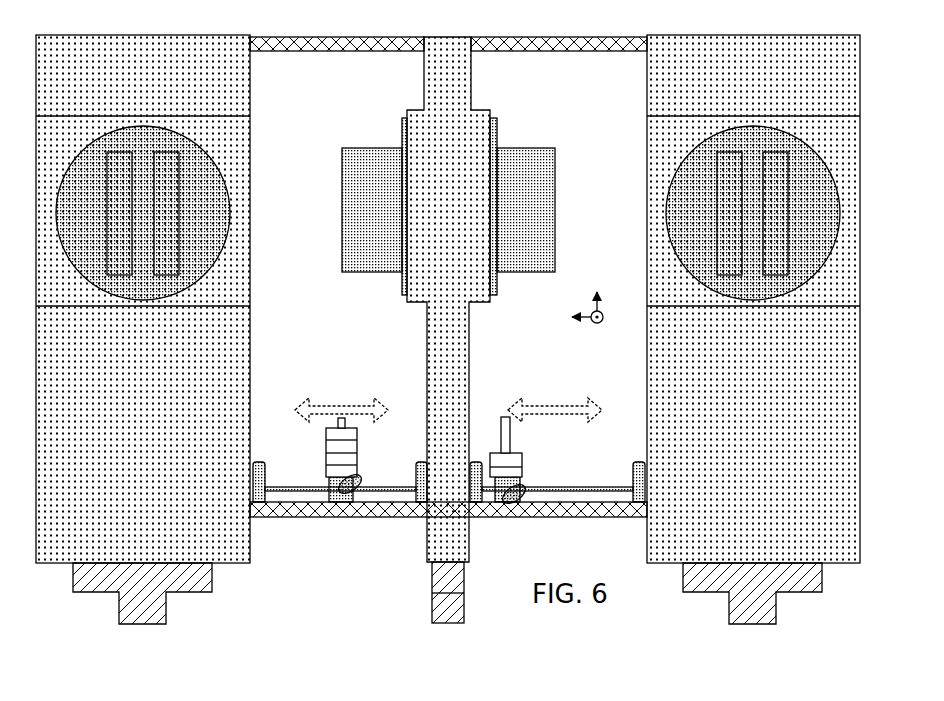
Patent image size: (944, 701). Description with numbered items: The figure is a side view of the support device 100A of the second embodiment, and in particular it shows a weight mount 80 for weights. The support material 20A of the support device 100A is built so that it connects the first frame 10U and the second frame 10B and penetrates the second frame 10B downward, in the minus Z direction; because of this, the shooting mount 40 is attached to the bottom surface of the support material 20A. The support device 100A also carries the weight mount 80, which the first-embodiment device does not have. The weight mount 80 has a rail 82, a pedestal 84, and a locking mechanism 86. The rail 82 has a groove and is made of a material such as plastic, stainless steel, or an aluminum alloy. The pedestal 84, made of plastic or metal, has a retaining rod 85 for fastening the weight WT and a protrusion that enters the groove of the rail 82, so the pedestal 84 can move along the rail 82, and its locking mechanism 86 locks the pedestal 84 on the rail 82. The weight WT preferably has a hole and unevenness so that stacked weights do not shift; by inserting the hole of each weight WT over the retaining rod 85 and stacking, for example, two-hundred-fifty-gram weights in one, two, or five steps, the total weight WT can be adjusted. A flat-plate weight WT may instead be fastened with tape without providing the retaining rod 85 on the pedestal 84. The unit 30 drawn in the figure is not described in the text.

The support device 100A is at (346, 129).
The first frame 10U is at (448, 57).
The second frame 10B is at (448, 524).
The support material 20A is at (448, 299).
The magnet / coil unit 30 is at (448, 213).
The shooting mount 40 is at (447, 593).
The weight mount 80 is at (449, 472).
The rail 82 is at (449, 480).
The pedestal 84 is at (409, 511).
The retaining rod 85 is at (523, 435).
The locking mechanism 86 is at (449, 505).
The weight WT is at (448, 447).